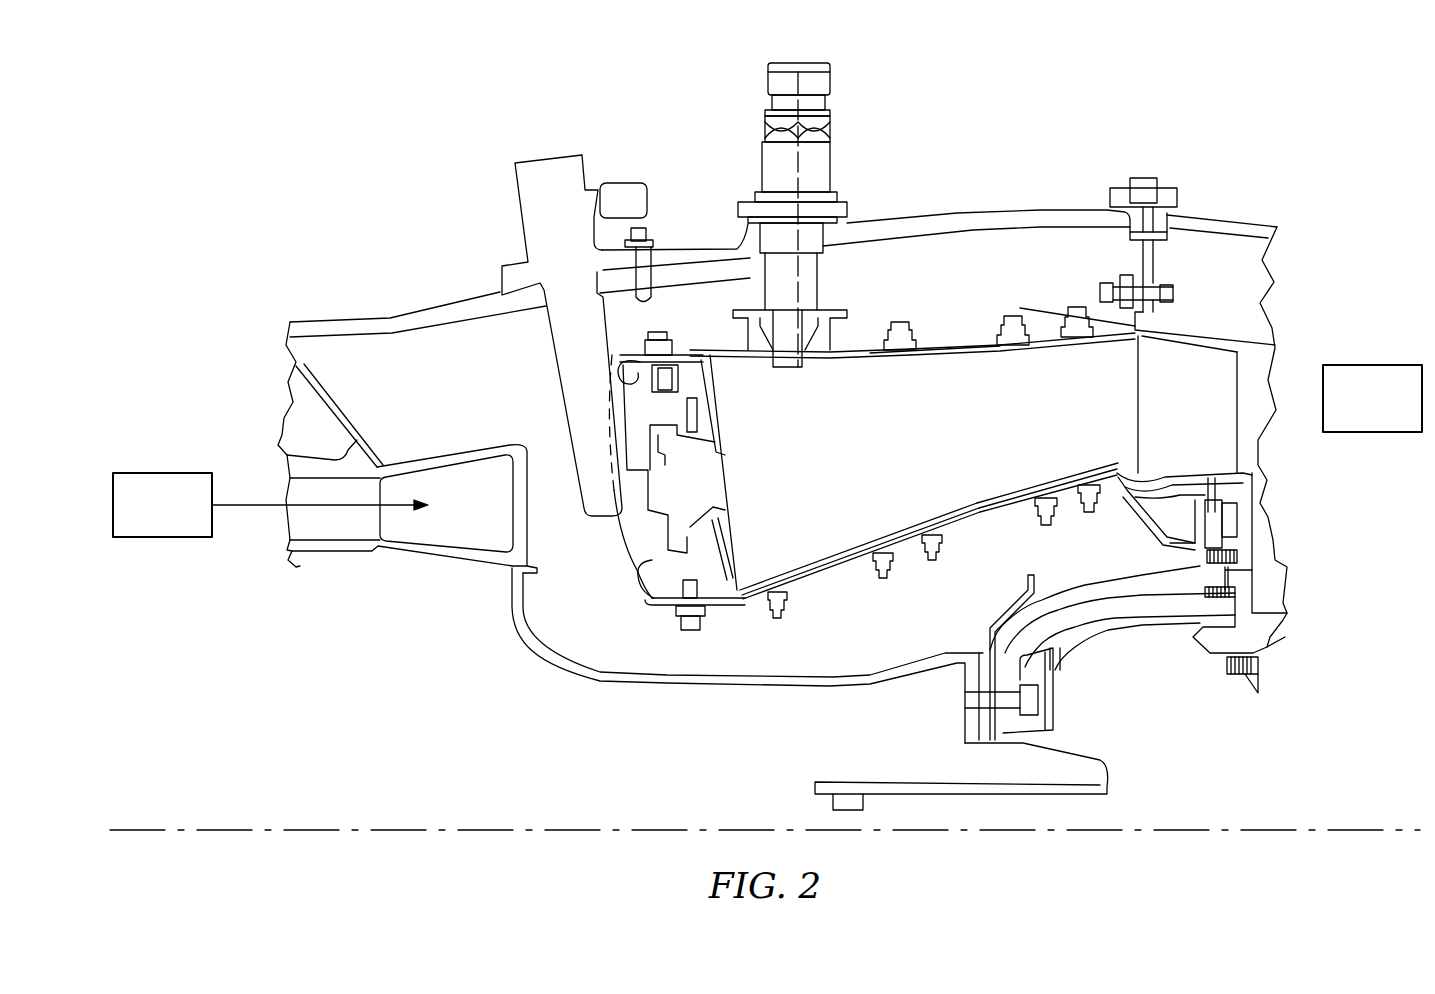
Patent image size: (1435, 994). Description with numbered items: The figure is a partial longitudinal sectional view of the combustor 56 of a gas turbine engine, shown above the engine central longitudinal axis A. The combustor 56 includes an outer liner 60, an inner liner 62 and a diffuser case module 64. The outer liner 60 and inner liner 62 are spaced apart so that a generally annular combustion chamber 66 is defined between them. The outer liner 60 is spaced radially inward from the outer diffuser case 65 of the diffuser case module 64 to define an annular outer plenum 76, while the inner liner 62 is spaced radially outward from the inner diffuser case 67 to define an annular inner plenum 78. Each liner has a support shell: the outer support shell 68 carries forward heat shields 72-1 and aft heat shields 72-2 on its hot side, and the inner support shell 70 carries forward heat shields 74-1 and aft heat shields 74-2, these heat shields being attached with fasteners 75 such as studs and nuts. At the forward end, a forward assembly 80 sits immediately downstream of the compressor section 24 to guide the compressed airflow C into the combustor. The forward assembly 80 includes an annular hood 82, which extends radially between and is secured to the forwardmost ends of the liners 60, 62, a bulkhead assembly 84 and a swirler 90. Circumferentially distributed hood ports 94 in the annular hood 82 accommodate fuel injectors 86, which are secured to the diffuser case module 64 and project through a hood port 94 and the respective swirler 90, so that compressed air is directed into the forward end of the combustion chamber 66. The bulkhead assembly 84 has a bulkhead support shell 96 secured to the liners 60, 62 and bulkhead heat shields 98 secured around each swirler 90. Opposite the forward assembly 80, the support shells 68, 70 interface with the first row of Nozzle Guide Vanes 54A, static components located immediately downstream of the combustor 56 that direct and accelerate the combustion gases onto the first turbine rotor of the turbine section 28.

The compressor section 24 is at (148, 518).
The turbine section 28 is at (1358, 411).
The Nozzle Guide Vanes 54A is at (1165, 424).
The combustor 56 is at (1064, 116).
The outer liner 60 is at (967, 332).
The inner liner 62 is at (912, 570).
The diffuser case module 64 is at (965, 210).
The outer diffuser case 65 is at (1025, 212).
The combustion chamber 66 is at (893, 457).
The inner diffuser case 67 is at (810, 690).
The outer support shell 68 is at (933, 350).
The inner support shell 70 is at (1032, 532).
The forward heat shields 72-1 is at (830, 365).
The aft heat shields 72-2 is at (1000, 357).
The forward heat shields 74-1 is at (834, 560).
The aft heat shields 74-2 is at (1000, 480).
The fasteners 75 is at (1093, 533).
The annular outer plenum 76 is at (872, 284).
The annular inner plenum 78 is at (847, 656).
The forward assembly 80 is at (630, 625).
The annular hood 82 is at (634, 581).
The bulkhead assembly 84 is at (722, 406).
The fuel injector 86 is at (552, 287).
The swirler 90 is at (725, 515).
The hood port 94 is at (622, 553).
The bulkhead support shell 96 is at (641, 601).
The bulkhead heat shields 98 is at (730, 555).
The engine central longitudinal axis A is at (1219, 828).
The compressed airflow C is at (247, 508).